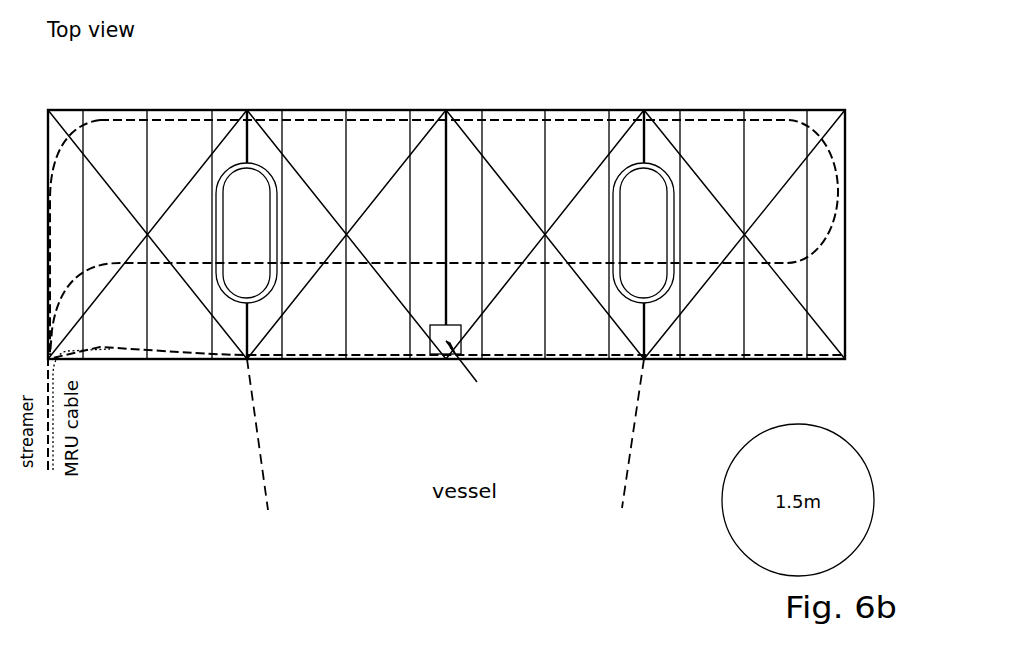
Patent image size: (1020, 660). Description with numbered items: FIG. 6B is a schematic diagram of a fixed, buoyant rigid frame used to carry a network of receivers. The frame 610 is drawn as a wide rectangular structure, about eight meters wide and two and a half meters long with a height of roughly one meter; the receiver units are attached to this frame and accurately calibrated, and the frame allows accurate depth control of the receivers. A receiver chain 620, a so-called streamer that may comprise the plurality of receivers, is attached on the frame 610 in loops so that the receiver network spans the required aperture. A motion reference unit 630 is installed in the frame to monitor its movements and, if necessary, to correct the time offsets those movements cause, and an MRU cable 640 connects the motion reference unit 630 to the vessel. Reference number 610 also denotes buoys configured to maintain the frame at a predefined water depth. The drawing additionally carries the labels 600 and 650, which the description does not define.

The vessel 600 is at (552, 362).
The frame 610 is at (626, 167).
The receiver chain 620 is at (770, 355).
The motion reference unit 630 is at (442, 356).
The MRU cable 640 is at (100, 354).
The tow line 650 is at (630, 453).